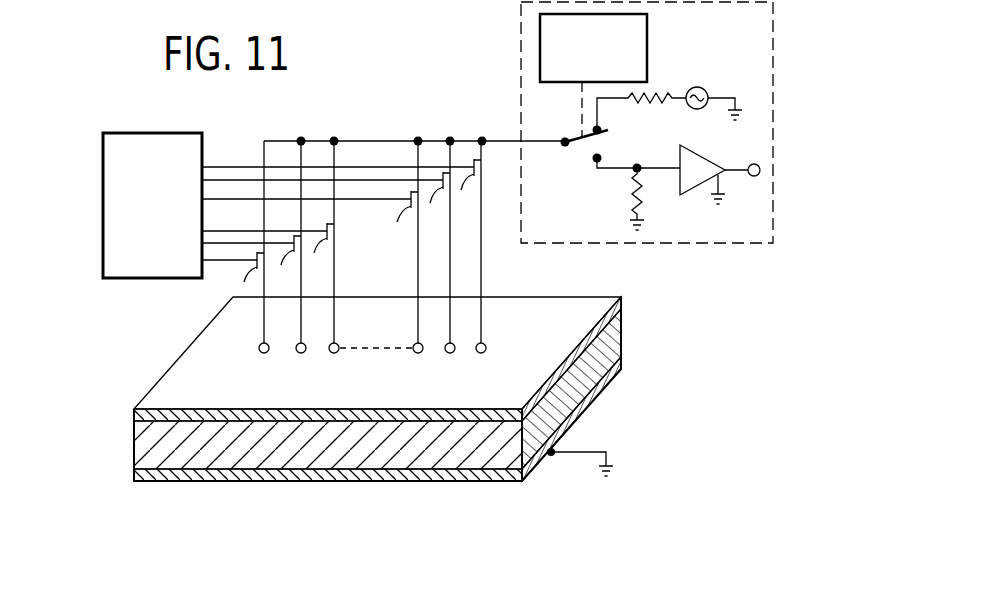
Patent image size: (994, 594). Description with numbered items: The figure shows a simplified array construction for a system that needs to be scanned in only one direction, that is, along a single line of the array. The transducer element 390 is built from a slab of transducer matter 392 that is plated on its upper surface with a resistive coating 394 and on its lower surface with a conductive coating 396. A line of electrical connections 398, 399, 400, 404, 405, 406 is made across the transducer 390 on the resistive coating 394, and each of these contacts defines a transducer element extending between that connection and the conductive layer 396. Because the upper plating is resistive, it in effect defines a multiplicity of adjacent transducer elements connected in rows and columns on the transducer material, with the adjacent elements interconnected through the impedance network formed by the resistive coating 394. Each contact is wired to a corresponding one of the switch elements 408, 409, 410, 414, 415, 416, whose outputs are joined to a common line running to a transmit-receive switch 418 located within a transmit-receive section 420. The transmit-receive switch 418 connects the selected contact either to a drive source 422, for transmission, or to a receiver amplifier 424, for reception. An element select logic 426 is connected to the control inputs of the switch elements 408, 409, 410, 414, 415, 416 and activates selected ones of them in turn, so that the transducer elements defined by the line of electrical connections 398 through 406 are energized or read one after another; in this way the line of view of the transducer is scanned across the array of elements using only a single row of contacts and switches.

The transducer element 390 is at (412, 420).
The slab of transducer matter 392 is at (453, 458).
The resistive coating 394 is at (172, 378).
The conductive coating 396 is at (158, 482).
The electrical connection 398 is at (258, 350).
The electrical connection 399 is at (299, 354).
The electrical connection 400 is at (336, 354).
The electrical connection 404 is at (415, 354).
The electrical connection 405 is at (452, 354).
The electrical connection 406 is at (487, 351).
The switch element 408 is at (241, 269).
The switch element 409 is at (285, 261).
The switch element 410 is at (319, 248).
The switch element 414 is at (400, 221).
The switch element 415 is at (438, 201).
The switch element 416 is at (469, 195).
The transmit-receive switch 418 is at (583, 150).
The transmit-receive section 420 is at (520, 69).
The drive source 422 is at (697, 87).
The receiver amplifier 424 is at (686, 178).
The element select logic 426 is at (110, 247).